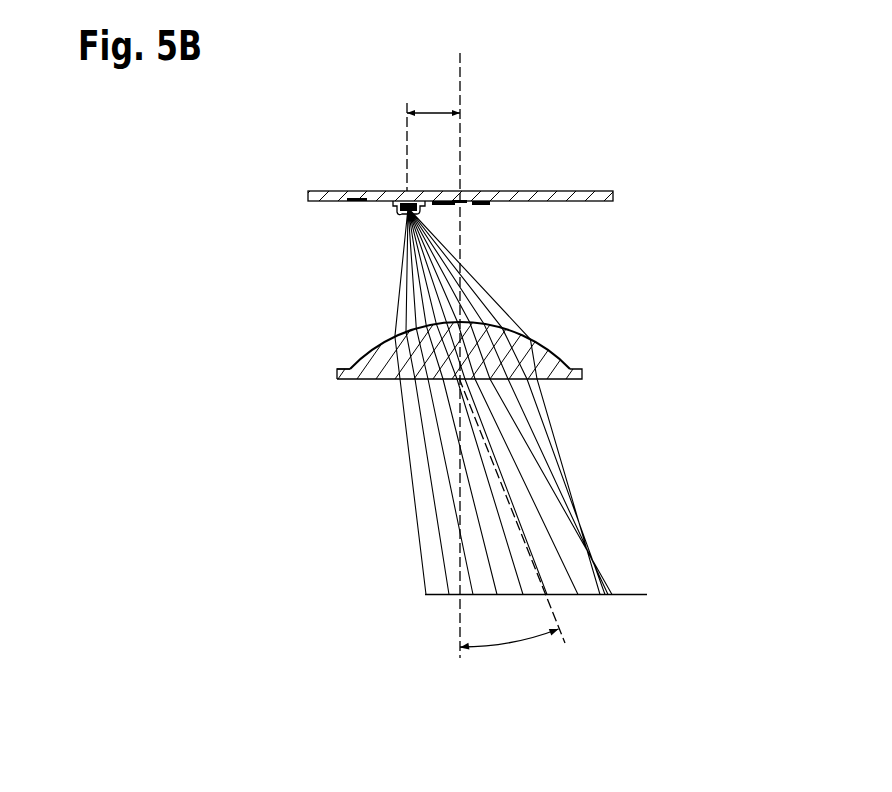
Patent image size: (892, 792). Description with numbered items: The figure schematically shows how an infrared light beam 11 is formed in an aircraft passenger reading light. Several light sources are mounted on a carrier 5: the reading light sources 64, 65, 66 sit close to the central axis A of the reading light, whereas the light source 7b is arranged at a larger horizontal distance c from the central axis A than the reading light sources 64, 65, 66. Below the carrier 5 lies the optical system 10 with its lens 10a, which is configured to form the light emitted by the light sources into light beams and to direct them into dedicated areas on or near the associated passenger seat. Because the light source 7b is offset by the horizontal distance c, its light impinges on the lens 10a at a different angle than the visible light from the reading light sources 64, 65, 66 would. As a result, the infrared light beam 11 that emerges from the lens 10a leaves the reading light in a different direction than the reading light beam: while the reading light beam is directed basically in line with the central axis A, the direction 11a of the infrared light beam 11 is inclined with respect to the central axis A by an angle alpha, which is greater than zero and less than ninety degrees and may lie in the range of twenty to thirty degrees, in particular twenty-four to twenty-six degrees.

The carrier / circuit board 5 is at (545, 195).
The light source 7b is at (393, 222).
The optical system 10 is at (558, 346).
The lens 10a is at (358, 372).
The infrared light beam 11 is at (586, 480).
The direction of the infrared light beam 11a is at (553, 620).
The reading light source 64 is at (443, 210).
The reading light source 65 is at (465, 189).
The reading light source 66 is at (485, 210).
The central axis A is at (453, 374).
The horizontal distance c is at (433, 137).
The angle alpha is at (509, 635).